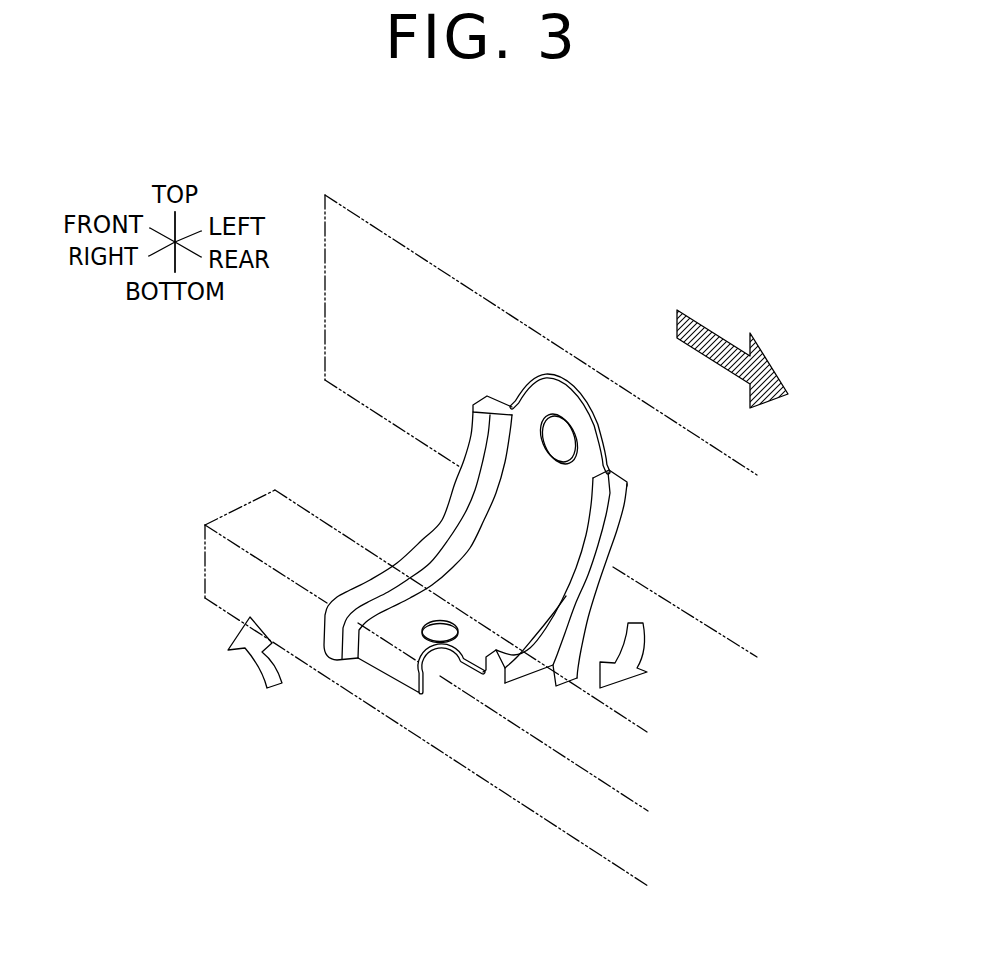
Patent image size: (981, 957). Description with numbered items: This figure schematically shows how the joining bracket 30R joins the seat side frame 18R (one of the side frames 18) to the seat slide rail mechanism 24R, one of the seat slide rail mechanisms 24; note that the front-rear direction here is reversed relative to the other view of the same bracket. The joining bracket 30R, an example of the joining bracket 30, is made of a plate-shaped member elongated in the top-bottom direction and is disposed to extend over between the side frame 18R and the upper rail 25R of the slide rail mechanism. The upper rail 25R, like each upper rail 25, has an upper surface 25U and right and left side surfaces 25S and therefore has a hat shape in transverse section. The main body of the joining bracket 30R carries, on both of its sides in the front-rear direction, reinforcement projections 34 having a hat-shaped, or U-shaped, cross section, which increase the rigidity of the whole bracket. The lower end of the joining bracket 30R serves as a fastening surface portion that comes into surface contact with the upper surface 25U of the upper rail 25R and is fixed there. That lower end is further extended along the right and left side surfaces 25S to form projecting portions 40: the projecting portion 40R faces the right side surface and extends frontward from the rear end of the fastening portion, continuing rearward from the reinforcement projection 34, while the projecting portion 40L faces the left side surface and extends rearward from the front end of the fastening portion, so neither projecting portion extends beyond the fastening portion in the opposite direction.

The side frame 18R is at (541, 426).
The side frame 18 is at (477, 290).
The seat slide rail mechanism 24R is at (426, 695).
The seat slide rail mechanism 24 is at (426, 688).
The upper rail 25R is at (426, 688).
The upper rail 25 is at (426, 688).
The upper surface 25U is at (318, 552).
The side surface 25S is at (272, 598).
The joining bracket 30R is at (535, 581).
The joining bracket 30 is at (530, 581).
The reinforcement projection 34 is at (447, 522).
The projecting portion 40R is at (406, 716).
The projecting portion 40L is at (577, 677).
The projecting portion 40 is at (387, 658).